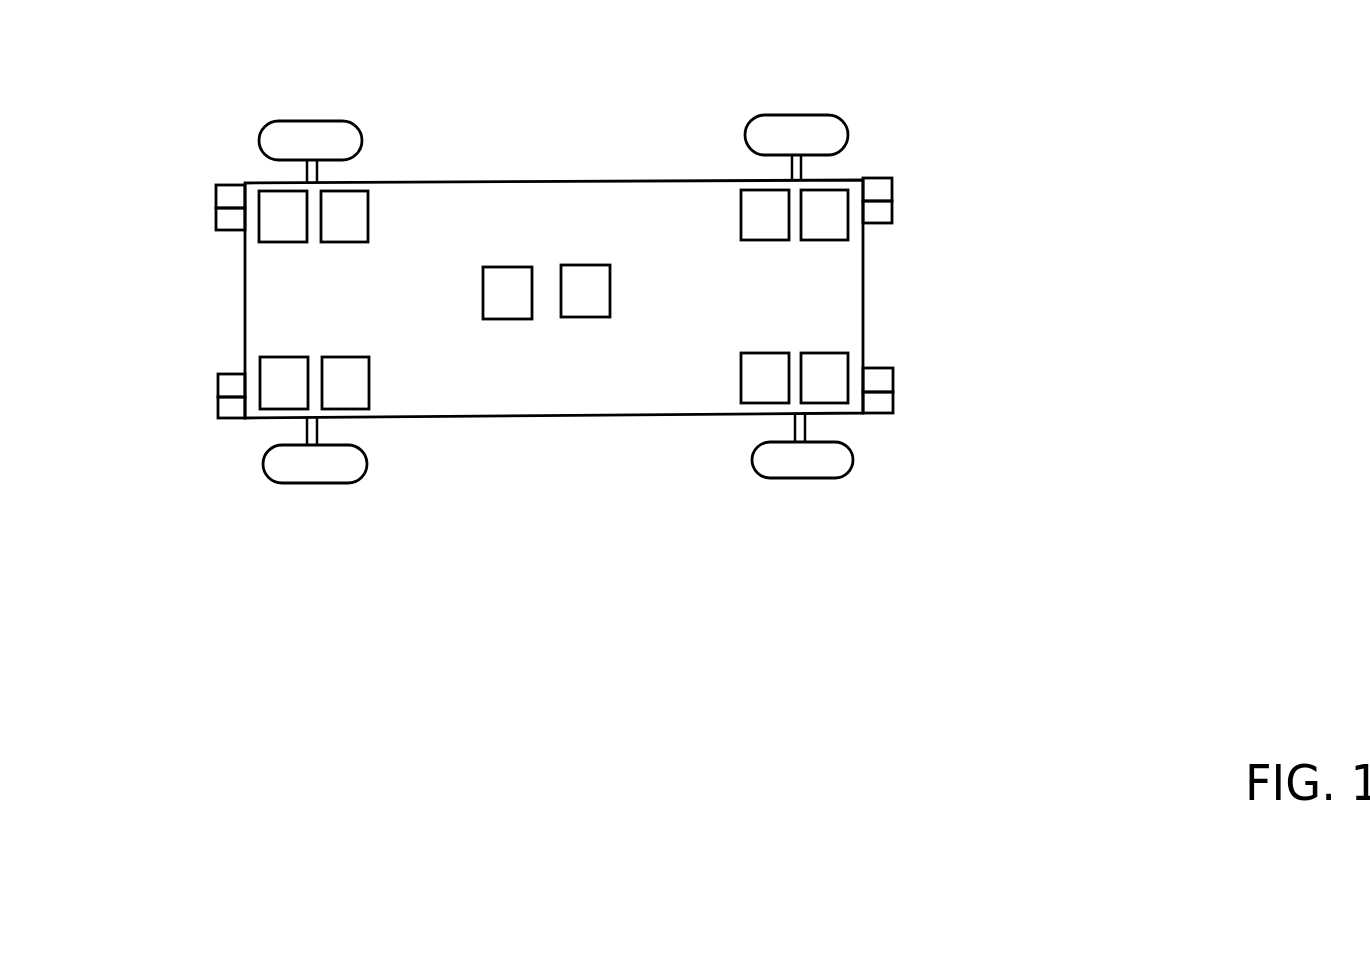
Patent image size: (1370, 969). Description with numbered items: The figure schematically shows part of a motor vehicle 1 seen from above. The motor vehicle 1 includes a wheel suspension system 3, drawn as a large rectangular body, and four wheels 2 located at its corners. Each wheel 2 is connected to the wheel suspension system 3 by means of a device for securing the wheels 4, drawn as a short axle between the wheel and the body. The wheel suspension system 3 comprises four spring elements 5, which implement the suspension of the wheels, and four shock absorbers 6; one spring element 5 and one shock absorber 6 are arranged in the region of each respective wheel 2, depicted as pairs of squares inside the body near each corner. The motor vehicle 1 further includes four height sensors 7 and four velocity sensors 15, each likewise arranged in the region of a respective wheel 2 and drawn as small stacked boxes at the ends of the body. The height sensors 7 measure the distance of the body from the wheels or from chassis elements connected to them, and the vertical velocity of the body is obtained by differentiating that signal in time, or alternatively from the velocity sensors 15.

The motor vehicle 1 is at (984, 100).
The wheel 2 is at (345, 124).
The wheel suspension system 3 is at (850, 303).
The device for securing the wheels 4 is at (806, 166).
The spring element 5 is at (357, 365).
The shock absorber 6 is at (285, 377).
The height sensor 7 is at (232, 193).
The velocity sensor 15 is at (223, 218).